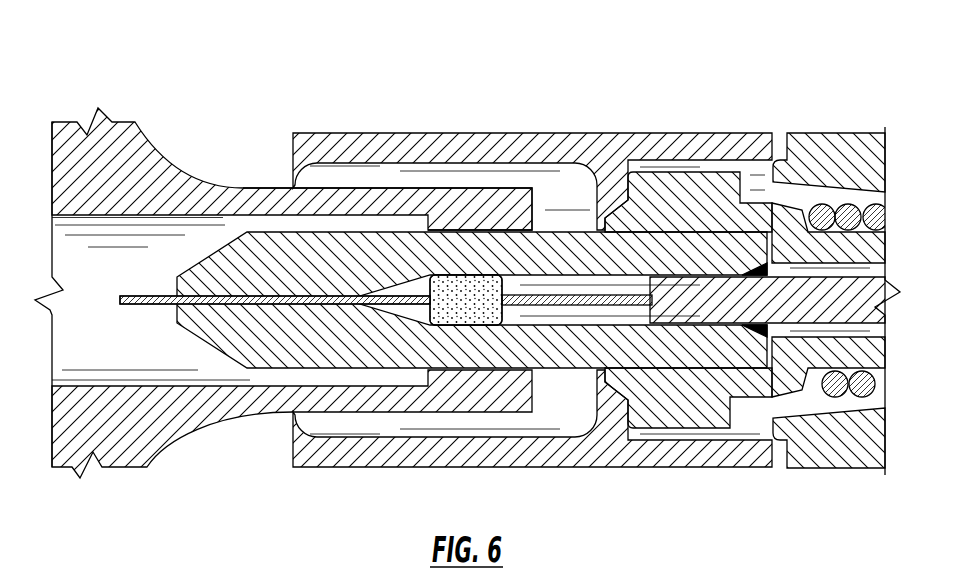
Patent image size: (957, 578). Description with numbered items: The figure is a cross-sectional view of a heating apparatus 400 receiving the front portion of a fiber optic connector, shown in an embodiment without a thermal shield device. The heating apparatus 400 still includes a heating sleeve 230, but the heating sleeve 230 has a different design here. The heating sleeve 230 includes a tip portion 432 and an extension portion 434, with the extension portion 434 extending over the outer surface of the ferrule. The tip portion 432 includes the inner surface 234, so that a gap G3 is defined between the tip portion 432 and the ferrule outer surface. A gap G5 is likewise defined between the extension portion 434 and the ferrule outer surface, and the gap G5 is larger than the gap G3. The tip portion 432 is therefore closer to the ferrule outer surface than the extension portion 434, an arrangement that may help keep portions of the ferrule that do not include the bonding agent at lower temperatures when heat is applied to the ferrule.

The heating apparatus 400 is at (174, 114).
The heating sleeve 230 is at (243, 186).
The extension portion 434 is at (352, 190).
The tip portion 432 is at (483, 207).
The inner surface 234 is at (510, 352).
The gap G5 is at (271, 335).
The gap G3 is at (456, 340).